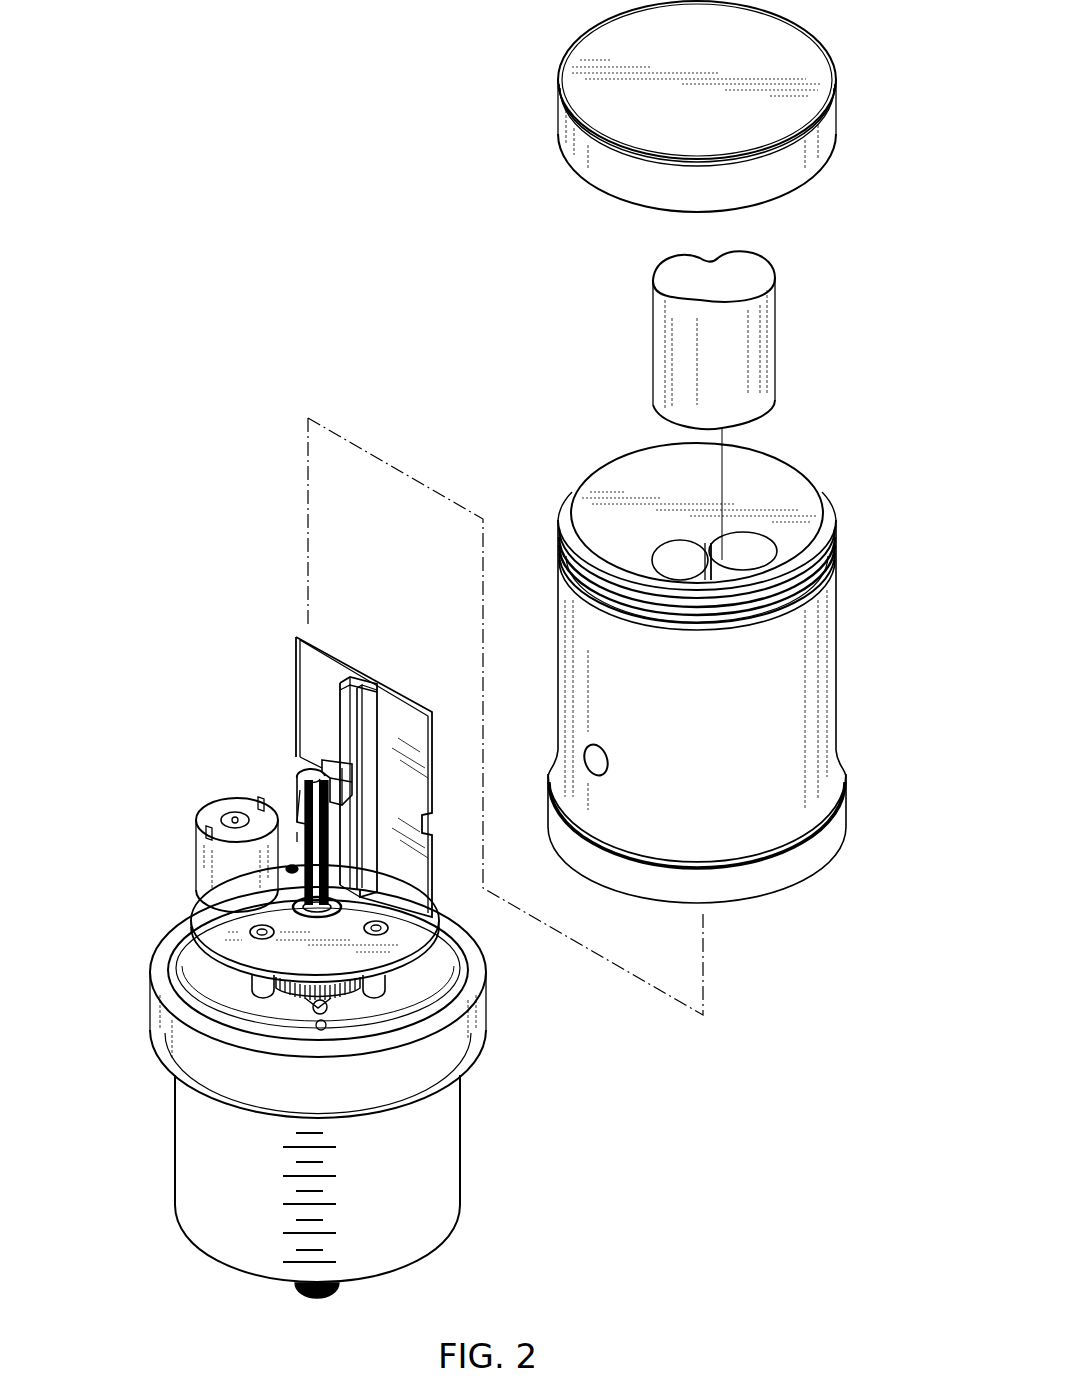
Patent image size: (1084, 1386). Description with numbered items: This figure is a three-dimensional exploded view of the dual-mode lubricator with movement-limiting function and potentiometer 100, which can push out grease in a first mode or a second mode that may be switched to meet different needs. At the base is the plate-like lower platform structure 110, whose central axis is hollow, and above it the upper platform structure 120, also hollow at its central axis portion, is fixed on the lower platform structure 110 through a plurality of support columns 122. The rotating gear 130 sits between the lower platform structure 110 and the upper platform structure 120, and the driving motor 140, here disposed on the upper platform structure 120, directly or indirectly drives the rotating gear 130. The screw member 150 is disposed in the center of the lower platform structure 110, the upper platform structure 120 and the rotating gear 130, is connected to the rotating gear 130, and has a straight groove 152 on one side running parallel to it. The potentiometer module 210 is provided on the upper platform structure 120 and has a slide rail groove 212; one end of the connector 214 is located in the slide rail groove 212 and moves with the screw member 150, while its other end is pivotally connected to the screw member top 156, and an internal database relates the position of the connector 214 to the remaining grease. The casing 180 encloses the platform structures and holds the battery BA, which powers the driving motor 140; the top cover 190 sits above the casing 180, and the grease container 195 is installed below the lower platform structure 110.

The dual-mode lubricator with movement-limiting function and potentiometer 100 is at (792, 1263).
The lower platform structure 110 is at (410, 990).
The upper platform structure 120 is at (415, 928).
The support columns 122 is at (378, 985).
The rotating gear 130 is at (285, 992).
The driving motor 140 is at (217, 857).
The screw member 150 is at (300, 805).
The straight groove 152 is at (306, 772).
The screw member top 156 is at (336, 758).
The casing 180 is at (810, 687).
The top cover 190 is at (823, 140).
The grease container 195 is at (440, 1170).
The potentiometer module 210 is at (323, 660).
The slide rail groove 212 is at (347, 680).
The connector 214 is at (340, 725).
The battery BA is at (755, 352).